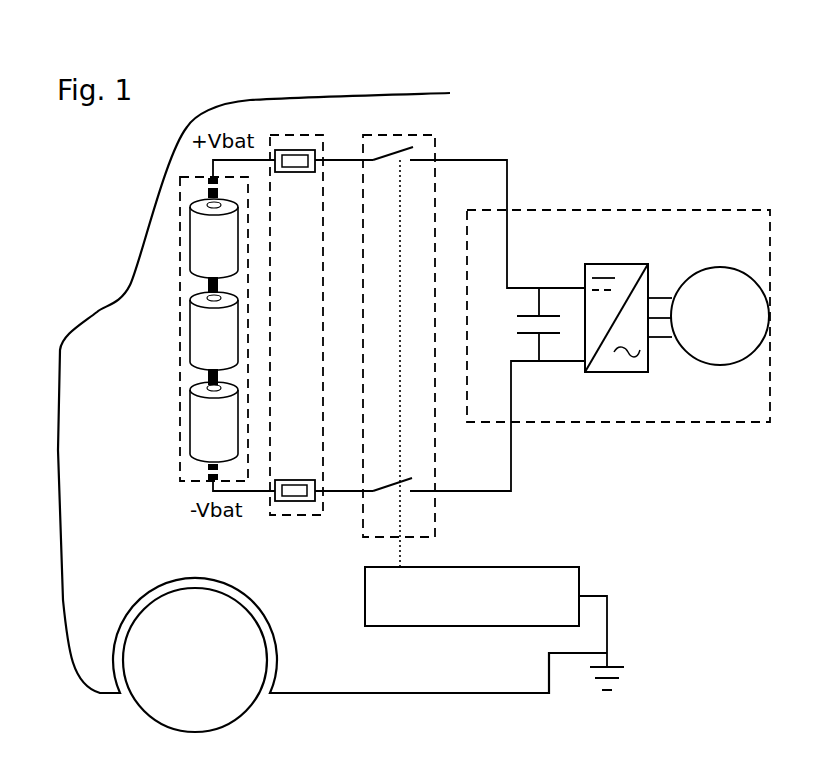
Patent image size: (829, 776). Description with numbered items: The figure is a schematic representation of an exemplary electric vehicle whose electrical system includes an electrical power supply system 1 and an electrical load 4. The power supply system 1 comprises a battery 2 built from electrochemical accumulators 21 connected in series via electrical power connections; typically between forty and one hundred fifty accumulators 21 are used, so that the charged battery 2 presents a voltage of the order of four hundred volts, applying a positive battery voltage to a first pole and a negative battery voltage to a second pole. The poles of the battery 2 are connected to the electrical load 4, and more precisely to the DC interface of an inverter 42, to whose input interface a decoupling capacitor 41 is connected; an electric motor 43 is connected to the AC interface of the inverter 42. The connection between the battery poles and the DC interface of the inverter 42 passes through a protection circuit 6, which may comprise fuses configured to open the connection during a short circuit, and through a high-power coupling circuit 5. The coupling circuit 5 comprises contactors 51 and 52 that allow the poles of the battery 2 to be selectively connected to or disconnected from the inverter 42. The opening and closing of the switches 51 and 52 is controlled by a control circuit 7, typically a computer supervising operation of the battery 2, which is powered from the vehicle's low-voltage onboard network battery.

The electrical power supply system 1 is at (512, 140).
The battery 2 is at (187, 329).
The electrochemical accumulator 21 is at (226, 253).
The electrical load 4 is at (618, 294).
The decoupling capacitor 41 is at (517, 315).
The inverter 42 is at (617, 375).
The electric motor 43 is at (733, 323).
The high-power coupling circuit 5 is at (404, 335).
The contactor 51 is at (423, 148).
The contactor 52 is at (423, 485).
The protection circuit 6 is at (295, 515).
The control circuit 7 is at (478, 599).